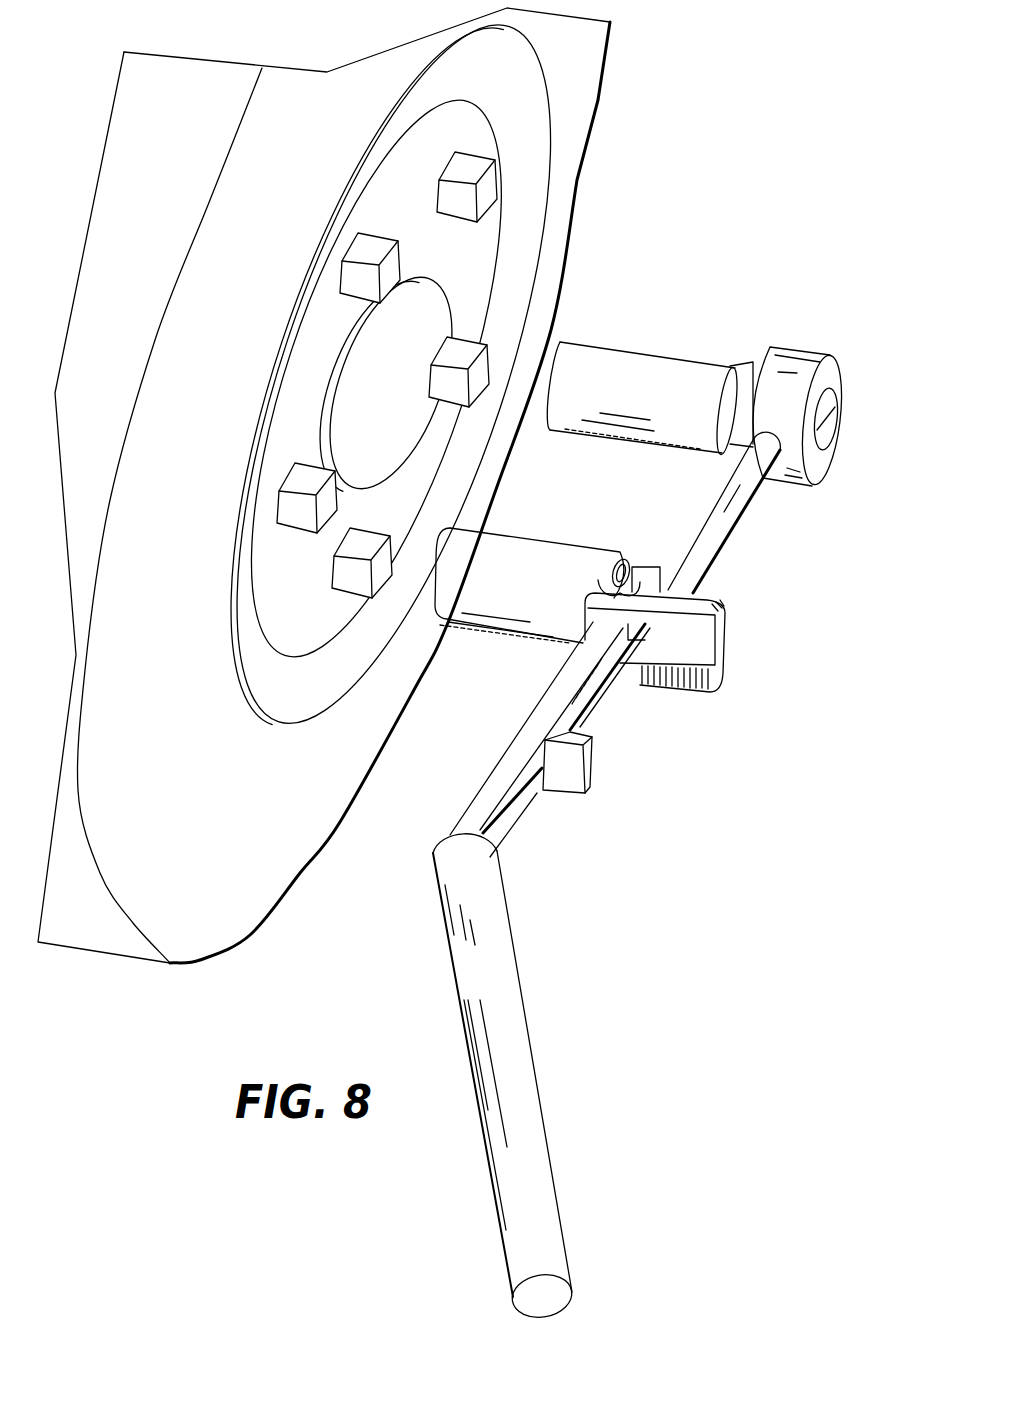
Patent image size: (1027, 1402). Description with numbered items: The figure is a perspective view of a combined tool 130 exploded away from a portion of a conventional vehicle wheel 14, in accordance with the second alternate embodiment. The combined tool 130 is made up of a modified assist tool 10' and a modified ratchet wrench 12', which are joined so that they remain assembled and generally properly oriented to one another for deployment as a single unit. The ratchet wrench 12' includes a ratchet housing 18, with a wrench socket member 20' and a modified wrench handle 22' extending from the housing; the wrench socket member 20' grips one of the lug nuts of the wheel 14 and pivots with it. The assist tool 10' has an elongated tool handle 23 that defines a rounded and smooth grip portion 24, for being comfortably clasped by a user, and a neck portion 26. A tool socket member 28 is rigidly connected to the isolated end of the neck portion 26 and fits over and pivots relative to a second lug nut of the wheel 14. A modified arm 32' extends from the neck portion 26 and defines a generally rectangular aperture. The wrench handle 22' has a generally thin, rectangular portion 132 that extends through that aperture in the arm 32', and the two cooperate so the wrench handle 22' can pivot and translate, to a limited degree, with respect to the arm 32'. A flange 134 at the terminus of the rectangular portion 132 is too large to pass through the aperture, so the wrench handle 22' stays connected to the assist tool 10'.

The vehicle wheel 14 is at (592, 16).
The wrench socket member 20' is at (650, 347).
The modified ratchet wrench 12' is at (840, 380).
The ratchet housing 18 is at (842, 384).
The tool socket member 28 is at (592, 546).
The modified wrench handle 22' is at (768, 512).
The modified arm 32' is at (713, 642).
The rectangular portion 132 is at (603, 705).
The neck portion 26 is at (577, 739).
The combined tool 130 is at (655, 725).
The flange 134 is at (557, 795).
The modified assist tool 10' is at (635, 780).
The tool handle 23 is at (432, 877).
The grip portion 24 is at (532, 1078).